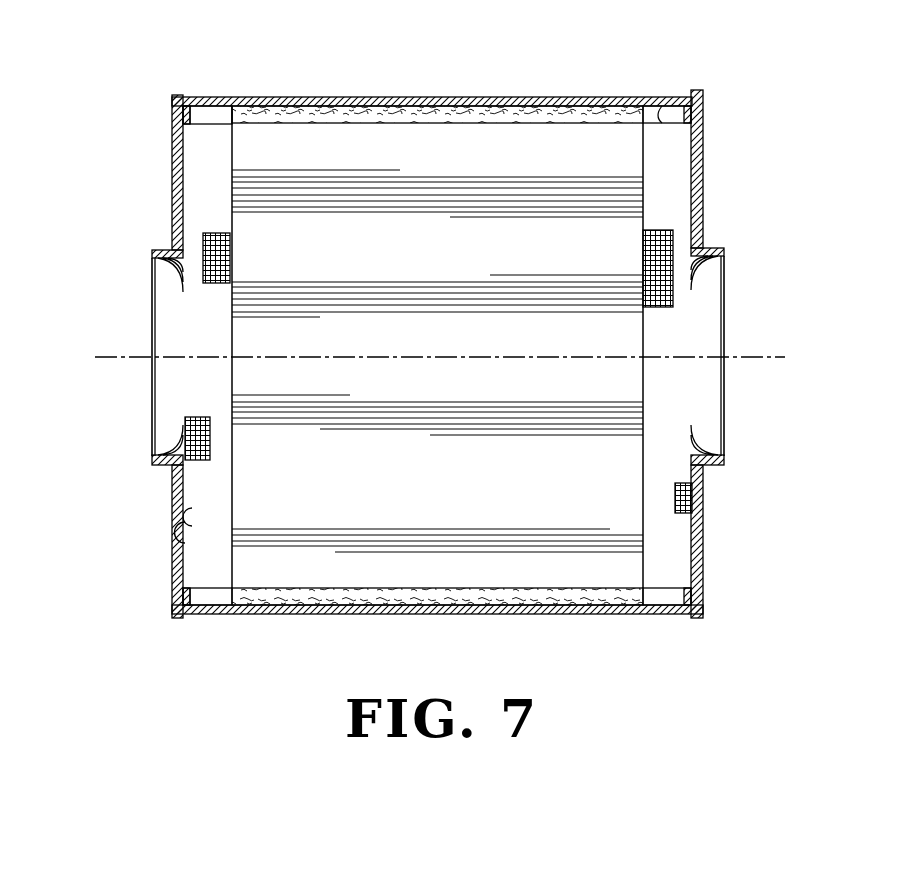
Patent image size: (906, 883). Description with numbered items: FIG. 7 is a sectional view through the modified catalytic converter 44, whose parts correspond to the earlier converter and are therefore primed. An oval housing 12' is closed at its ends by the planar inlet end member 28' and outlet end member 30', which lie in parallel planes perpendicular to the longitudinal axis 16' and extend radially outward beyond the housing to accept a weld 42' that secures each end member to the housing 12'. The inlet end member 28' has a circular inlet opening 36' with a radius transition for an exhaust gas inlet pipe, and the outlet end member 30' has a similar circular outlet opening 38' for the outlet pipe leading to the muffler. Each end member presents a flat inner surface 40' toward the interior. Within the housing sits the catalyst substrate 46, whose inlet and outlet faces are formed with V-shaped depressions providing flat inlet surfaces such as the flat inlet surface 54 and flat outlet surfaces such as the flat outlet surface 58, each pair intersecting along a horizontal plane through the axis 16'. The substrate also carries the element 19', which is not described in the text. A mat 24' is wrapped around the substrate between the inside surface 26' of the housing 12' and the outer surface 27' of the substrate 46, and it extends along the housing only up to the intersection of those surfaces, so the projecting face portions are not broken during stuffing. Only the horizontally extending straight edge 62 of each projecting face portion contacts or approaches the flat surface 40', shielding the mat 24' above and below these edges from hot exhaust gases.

The housing 12' is at (432, 75).
The longitudinal axis 16' is at (422, 328).
The catalyst substrate elements 19' is at (420, 367).
The mat 24' is at (437, 362).
The inside surface 26' is at (673, 80).
The outer surface 27' is at (645, 632).
The inlet end member 28' is at (139, 356).
The outlet end member 30' is at (739, 354).
The inlet opening 36' is at (133, 362).
The outlet opening 38' is at (753, 351).
The flat inner surface 40' is at (439, 538).
The weld 42' is at (213, 326).
The catalytic converter 44 is at (441, 315).
The catalyst substrate 46 is at (258, 128).
The flat inlet surface 54 is at (143, 362).
The flat outlet surface 58 is at (750, 356).
The straight edge 62 is at (183, 303).